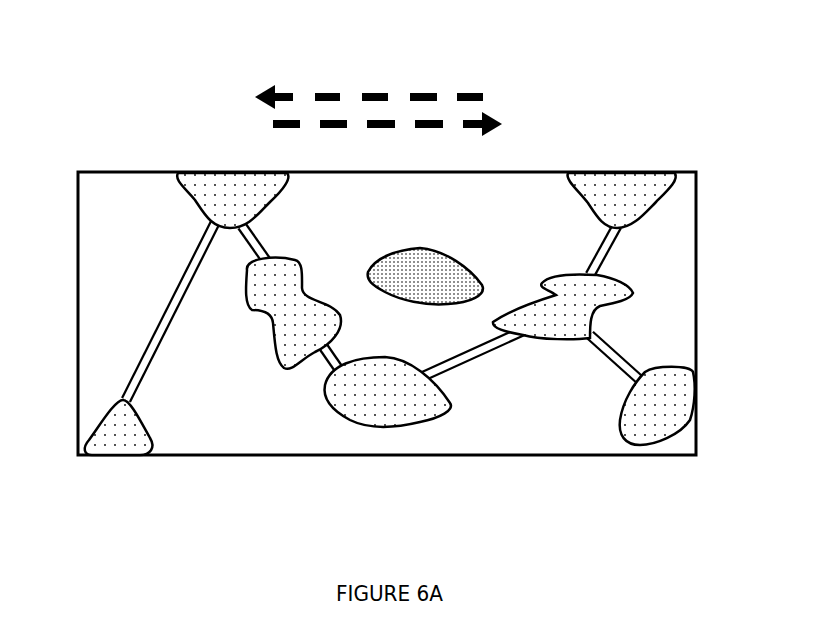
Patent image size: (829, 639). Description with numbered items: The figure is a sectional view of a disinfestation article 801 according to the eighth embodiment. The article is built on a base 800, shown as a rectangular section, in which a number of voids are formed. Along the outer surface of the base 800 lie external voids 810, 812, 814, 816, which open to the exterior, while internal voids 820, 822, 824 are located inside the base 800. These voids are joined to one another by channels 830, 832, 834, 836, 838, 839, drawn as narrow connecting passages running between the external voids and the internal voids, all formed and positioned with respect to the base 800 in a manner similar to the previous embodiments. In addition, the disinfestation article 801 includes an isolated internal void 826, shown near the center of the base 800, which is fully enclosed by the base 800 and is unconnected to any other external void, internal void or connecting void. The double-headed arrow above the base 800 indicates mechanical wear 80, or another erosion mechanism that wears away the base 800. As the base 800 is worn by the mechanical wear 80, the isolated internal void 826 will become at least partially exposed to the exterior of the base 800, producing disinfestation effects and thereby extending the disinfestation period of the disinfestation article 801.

The disinfestation article 801 is at (138, 58).
The base 800 is at (106, 180).
The mechanical wear 80 is at (374, 92).
The external void 810 is at (226, 195).
The external void 812 is at (638, 197).
The external void 814 is at (98, 445).
The external void 816 is at (652, 436).
The internal void 820 is at (270, 335).
The internal void 822 is at (390, 416).
The internal void 824 is at (612, 304).
The isolated internal void 826 is at (447, 258).
The channel 830 is at (263, 260).
The channel 832 is at (332, 365).
The channel 834 is at (146, 357).
The channel 836 is at (608, 253).
The channel 838 is at (618, 368).
The channel 839 is at (458, 372).